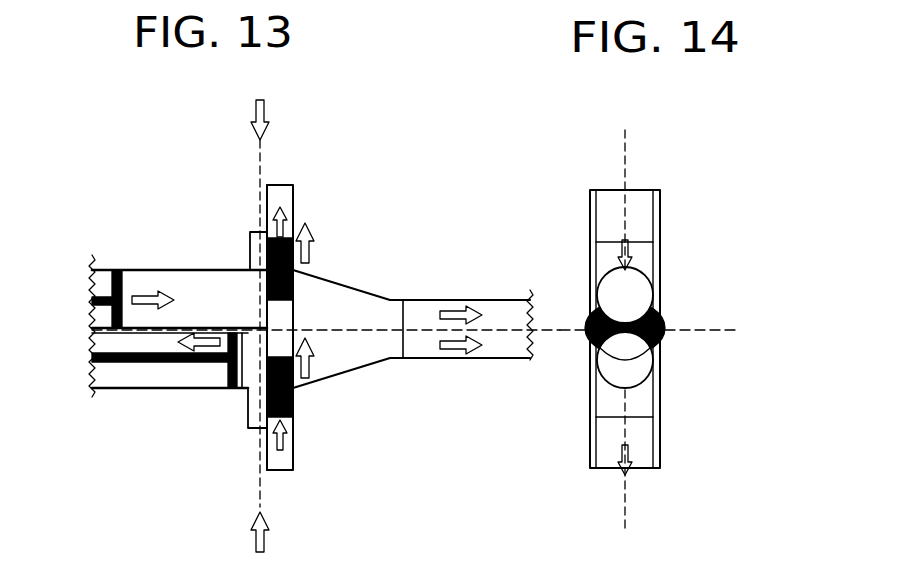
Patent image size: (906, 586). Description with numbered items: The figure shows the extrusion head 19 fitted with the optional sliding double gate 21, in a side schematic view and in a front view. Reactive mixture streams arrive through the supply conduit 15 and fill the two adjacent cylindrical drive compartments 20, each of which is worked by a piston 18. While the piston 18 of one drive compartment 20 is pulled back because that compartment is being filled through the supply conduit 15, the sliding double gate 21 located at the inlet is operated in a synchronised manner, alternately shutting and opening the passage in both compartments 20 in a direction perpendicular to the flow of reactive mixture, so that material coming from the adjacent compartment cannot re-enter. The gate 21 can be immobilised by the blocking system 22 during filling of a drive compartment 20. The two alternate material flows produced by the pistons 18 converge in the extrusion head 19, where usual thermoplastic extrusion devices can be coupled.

In FIG. 13, the supply duct 15 is at (252, 221).
In FIG. 14, the supply duct 15 is at (632, 210).
In FIG. 13, the piston 18 is at (115, 265).
In FIG. 14, the piston 18 is at (598, 300).
In FIG. 13, the extrusion head 19 is at (345, 205).
In FIG. 14, the extrusion head 19 is at (690, 220).
In FIG. 13, the drive compartment 20 is at (183, 277).
In FIG. 14, the drive compartment 20 is at (600, 272).
In FIG. 13, the sliding double gate 21 is at (292, 400).
In FIG. 14, the sliding double gate 21 is at (640, 395).
In FIG. 13, the blocking system 22 is at (250, 258).